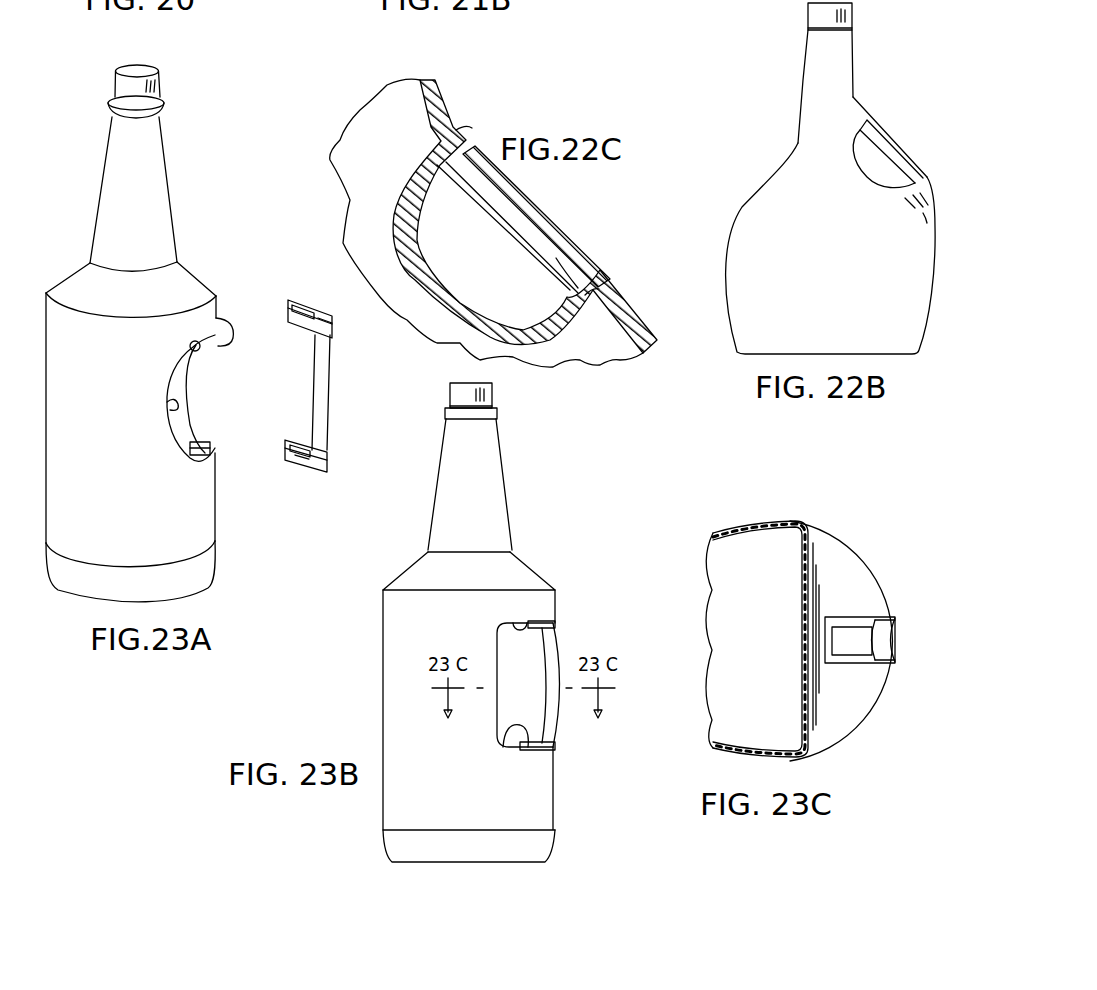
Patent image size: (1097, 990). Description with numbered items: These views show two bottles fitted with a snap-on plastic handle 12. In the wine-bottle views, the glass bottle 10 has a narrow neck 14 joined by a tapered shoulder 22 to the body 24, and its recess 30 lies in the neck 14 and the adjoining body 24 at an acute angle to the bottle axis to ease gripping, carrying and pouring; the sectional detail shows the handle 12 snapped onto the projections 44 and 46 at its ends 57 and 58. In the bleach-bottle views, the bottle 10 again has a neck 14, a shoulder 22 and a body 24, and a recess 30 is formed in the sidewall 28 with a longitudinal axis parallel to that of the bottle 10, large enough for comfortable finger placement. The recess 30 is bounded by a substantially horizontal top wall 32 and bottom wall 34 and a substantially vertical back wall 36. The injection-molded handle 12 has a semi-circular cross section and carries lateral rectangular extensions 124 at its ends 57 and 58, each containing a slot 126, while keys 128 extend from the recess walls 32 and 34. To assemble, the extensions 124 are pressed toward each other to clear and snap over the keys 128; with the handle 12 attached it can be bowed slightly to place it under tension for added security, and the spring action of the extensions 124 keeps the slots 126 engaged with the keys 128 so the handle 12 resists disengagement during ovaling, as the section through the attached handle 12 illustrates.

In FIG. 23A, the bottle 10 is at (89, 202).
In FIG. 23A, the handle 12 is at (330, 386).
In FIG. 22C, the handle 12 is at (530, 213).
In FIG. 22B, the handle 12 is at (875, 118).
In FIG. 23B, the handle 12 is at (565, 647).
In FIG. 23C, the handle 12 is at (895, 640).
In FIG. 23A, the neck 14 is at (169, 195).
In FIG. 22C, the neck 14 is at (441, 90).
In FIG. 22B, the neck 14 is at (851, 72).
In FIG. 23B, the neck 14 is at (470, 467).
In FIG. 23A, the shoulder 22 is at (190, 272).
In FIG. 22C, the body 24 is at (636, 334).
In FIG. 22B, the body 24 is at (831, 225).
In FIG. 23A, the sidewall 28 is at (219, 482).
In FIG. 23B, the sidewall 28 is at (469, 707).
In FIG. 23C, the sidewall 28 is at (748, 518).
In FIG. 23A, the recess 30 is at (188, 388).
In FIG. 22C, the recess 30 is at (465, 266).
In FIG. 22B, the recess 30 is at (878, 168).
In FIG. 23A, the top wall 32 is at (188, 346).
In FIG. 23B, the top wall 32 is at (510, 622).
In FIG. 23A, the bottom wall 34 is at (210, 453).
In FIG. 23B, the bottom wall 34 is at (502, 726).
In FIG. 23C, the bottom wall 34 is at (846, 580).
In FIG. 23A, the back wall 36 is at (169, 404).
In FIG. 22C, the projection 44 is at (459, 204).
In FIG. 22C, the projection 46 is at (548, 262).
In FIG. 23A, the handle end 57 is at (330, 346).
In FIG. 22C, the handle end 57 is at (465, 137).
In FIG. 23A, the handle end 58 is at (328, 446).
In FIG. 22C, the handle end 58 is at (593, 286).
In FIG. 23A, the lateral rectangular extension 124 is at (289, 302).
In FIG. 23B, the lateral rectangular extension 124 is at (528, 625).
In FIG. 23C, the lateral rectangular extension 124 is at (855, 616).
In FIG. 23A, the slot 126 is at (314, 320).
In FIG. 23C, the slot 126 is at (850, 656).
In FIG. 23A, the key 128 is at (211, 342).
In FIG. 23C, the key 128 is at (853, 631).